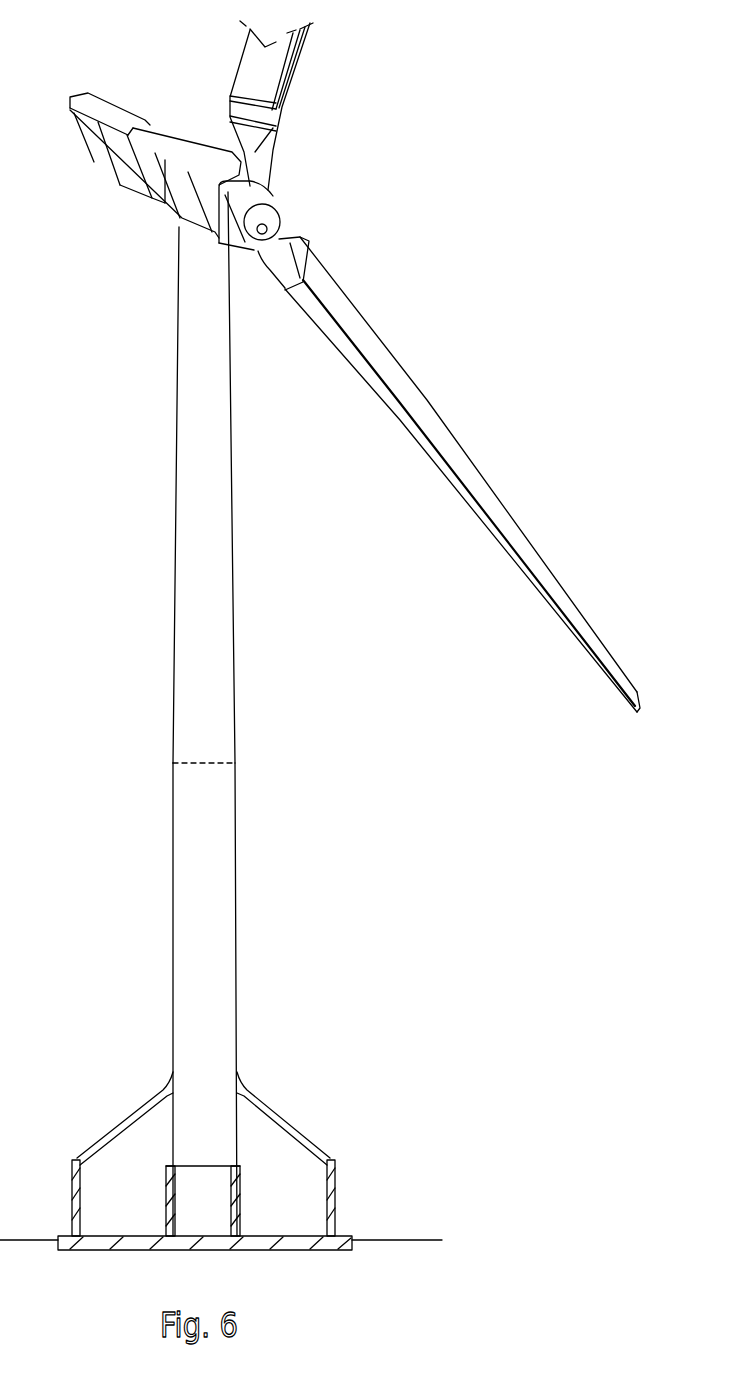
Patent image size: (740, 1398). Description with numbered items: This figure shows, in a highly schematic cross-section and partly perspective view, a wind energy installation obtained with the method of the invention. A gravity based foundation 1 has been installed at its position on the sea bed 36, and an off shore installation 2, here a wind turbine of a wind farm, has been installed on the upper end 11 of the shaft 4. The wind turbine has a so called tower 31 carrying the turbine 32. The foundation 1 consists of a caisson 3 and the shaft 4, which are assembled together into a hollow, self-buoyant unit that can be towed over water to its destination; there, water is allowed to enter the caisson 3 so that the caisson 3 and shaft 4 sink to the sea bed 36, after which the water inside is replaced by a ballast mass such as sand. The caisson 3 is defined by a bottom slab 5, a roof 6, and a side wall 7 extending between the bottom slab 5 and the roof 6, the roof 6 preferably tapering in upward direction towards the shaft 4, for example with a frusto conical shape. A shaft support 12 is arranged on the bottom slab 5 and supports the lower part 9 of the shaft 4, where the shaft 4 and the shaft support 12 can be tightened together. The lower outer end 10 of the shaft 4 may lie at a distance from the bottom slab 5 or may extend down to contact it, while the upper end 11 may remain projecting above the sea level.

The gravity based foundation 1 is at (320, 654).
The off shore installation 2 is at (355, 363).
The caisson 3 is at (215, 1167).
The shaft 4 is at (185, 793).
The bottom slab 5 is at (262, 1249).
The roof 6 is at (130, 1113).
The side wall 7 is at (72, 1187).
The lower part of shaft 9 is at (220, 1112).
The lower outer end of shaft 10 is at (192, 1166).
The upper end of shaft 11 is at (210, 762).
The shaft support 12 is at (165, 1197).
The tower 31 is at (187, 714).
The turbine 32 is at (198, 157).
The sea bed 36 is at (402, 1238).